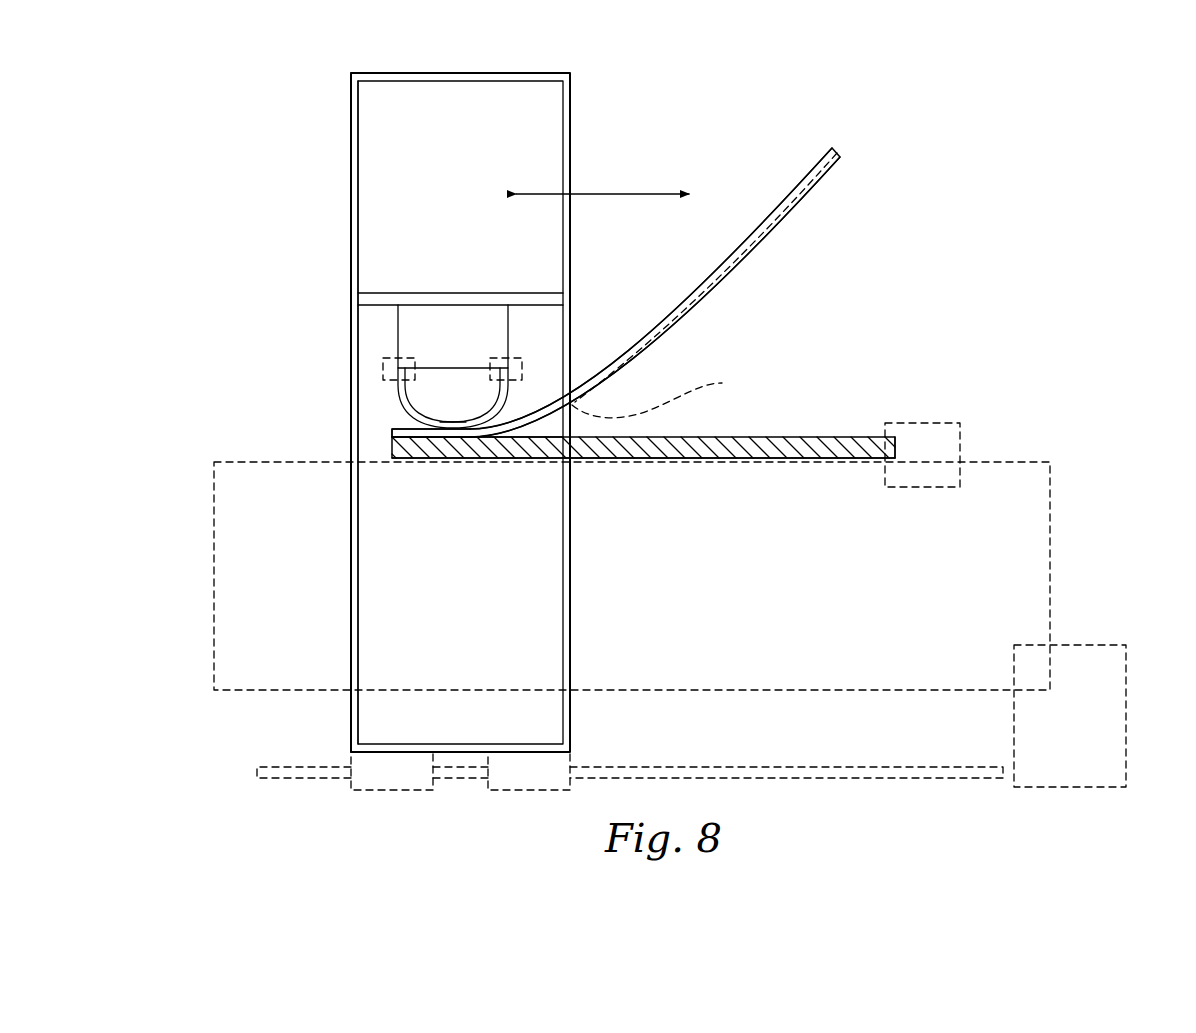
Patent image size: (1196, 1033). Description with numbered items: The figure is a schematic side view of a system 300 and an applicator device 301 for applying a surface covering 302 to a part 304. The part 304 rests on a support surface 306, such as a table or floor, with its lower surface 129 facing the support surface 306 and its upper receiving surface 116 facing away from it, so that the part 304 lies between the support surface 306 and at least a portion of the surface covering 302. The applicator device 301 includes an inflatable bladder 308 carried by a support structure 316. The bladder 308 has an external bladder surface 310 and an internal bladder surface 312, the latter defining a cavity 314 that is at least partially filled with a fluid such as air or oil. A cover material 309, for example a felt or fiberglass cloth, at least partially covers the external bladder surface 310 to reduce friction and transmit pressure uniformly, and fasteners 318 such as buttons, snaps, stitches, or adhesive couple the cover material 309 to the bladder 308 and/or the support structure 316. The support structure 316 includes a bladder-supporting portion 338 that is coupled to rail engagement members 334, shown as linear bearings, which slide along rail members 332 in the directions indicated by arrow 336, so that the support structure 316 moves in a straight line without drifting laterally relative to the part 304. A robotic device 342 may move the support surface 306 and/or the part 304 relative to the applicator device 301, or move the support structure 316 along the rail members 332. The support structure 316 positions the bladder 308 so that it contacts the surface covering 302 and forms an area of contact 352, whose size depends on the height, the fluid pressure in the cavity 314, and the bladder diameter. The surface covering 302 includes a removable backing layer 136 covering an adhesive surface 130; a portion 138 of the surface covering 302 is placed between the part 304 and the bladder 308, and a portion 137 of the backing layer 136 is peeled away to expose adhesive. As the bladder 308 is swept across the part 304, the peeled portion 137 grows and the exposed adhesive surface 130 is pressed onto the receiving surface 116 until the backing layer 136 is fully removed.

The system 300 is at (191, 112).
The applicator device 301 is at (229, 195).
The surface covering 302 is at (790, 187).
The part 304 is at (892, 436).
The support surface 306 is at (1033, 565).
The inflatable bladder 308 is at (391, 403).
The cover material 309 is at (451, 416).
The external bladder surface 310 is at (509, 397).
The internal bladder surface 312 is at (398, 371).
The cavity 314 is at (454, 398).
The support structure 316 is at (576, 114).
The fasteners 318 is at (385, 358).
The adhesive surface 130 is at (543, 438).
The lower surface 129 is at (800, 460).
The receiving surface 116 is at (781, 431).
The backing layer 136 is at (756, 254).
The portion of backing layer 137 is at (674, 402).
The portion of surface covering 138 is at (512, 416).
The rail members 332 is at (268, 765).
The rail engagement members 334 is at (345, 756).
The arrow 336 is at (604, 193).
The bladder-supporting portion 338 is at (347, 275).
The robotic device 342 is at (960, 443).
The area of contact 352 is at (405, 431).